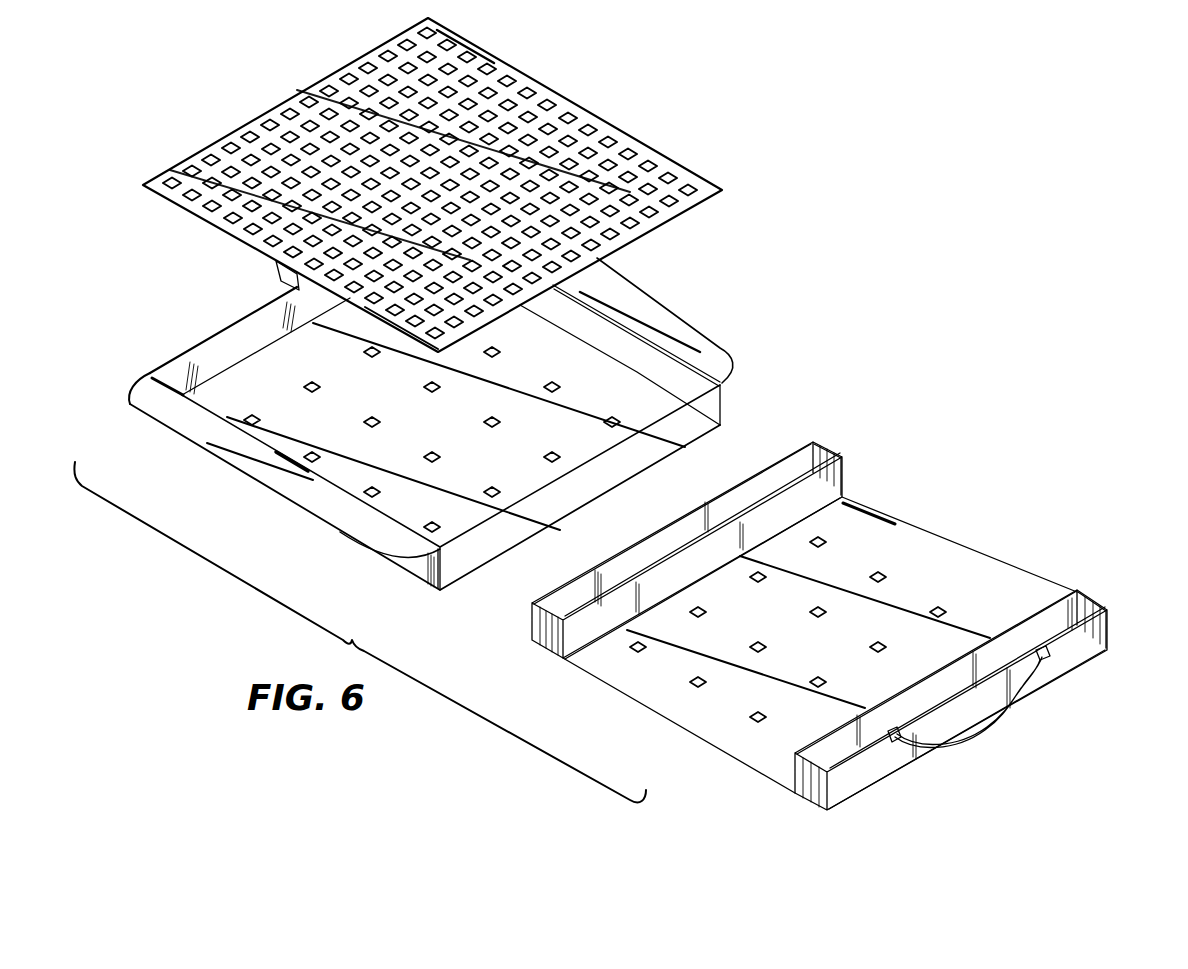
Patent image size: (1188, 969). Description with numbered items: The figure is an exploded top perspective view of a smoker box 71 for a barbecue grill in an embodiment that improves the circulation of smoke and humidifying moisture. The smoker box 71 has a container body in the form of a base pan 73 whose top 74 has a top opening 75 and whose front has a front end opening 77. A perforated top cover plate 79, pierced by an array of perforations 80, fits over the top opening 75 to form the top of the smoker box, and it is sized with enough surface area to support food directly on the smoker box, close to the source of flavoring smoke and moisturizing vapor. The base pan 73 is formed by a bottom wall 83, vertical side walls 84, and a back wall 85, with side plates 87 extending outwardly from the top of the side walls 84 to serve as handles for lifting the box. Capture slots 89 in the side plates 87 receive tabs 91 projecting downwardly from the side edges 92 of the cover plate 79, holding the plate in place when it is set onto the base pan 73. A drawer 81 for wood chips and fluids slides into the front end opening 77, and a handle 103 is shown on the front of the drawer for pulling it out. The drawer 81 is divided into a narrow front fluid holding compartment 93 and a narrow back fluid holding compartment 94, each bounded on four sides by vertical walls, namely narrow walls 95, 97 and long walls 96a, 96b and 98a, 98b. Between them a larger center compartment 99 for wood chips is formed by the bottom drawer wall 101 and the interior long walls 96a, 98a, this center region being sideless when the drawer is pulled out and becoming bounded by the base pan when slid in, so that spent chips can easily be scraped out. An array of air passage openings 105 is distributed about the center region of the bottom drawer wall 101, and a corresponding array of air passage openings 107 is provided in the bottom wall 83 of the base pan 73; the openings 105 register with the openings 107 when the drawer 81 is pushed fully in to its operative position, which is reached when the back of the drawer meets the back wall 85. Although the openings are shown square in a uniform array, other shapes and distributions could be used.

The smoker box 71 is at (741, 306).
The base pan 73 is at (311, 539).
The top 74 is at (158, 364).
The top opening 75 is at (284, 356).
The front end opening 77 is at (468, 559).
The perforated top cover plate 79 is at (690, 185).
The perforations 80 is at (547, 105).
The drawer 81 is at (896, 506).
The bottom wall 83 is at (620, 486).
The side walls 84 is at (418, 565).
The back wall 85 is at (202, 368).
The side plates 87 is at (157, 412).
The capture slots 89 is at (292, 458).
The tabs 91 is at (283, 278).
The side edges 92 is at (497, 60).
The front fluid holding compartment 93 is at (1083, 602).
The back fluid holding compartment 94 is at (797, 462).
The narrow wall 95 is at (1107, 612).
The long wall 96a is at (1057, 597).
The long wall 96b is at (1067, 656).
The narrow wall 97 is at (822, 443).
The long wall 98a is at (848, 492).
The long wall 98b is at (731, 502).
The center compartment 99 is at (898, 540).
The bottom drawer wall 101 is at (700, 738).
The handle 103 is at (1017, 713).
The air passage openings 105 is at (940, 610).
The air passage openings 107 is at (613, 418).